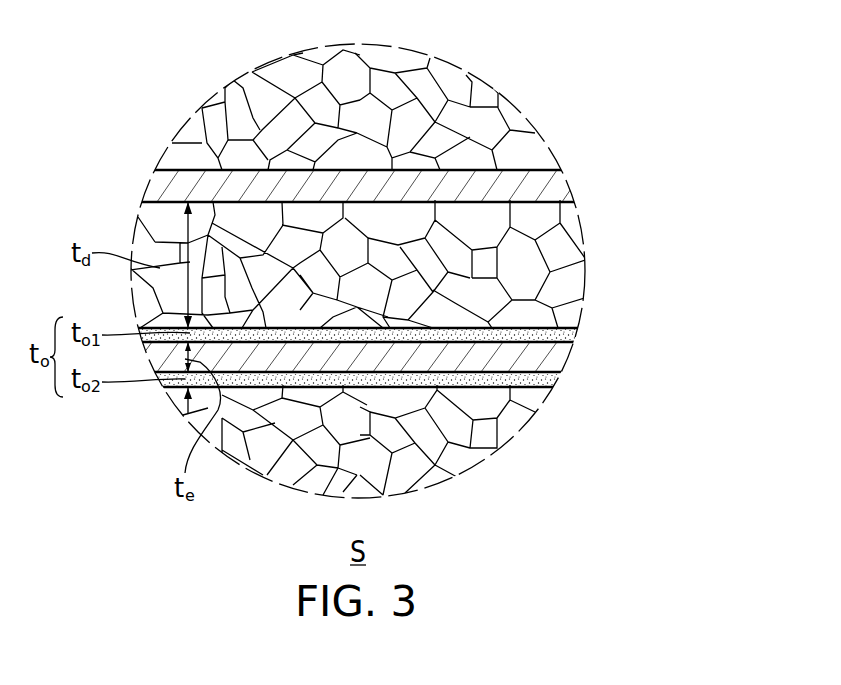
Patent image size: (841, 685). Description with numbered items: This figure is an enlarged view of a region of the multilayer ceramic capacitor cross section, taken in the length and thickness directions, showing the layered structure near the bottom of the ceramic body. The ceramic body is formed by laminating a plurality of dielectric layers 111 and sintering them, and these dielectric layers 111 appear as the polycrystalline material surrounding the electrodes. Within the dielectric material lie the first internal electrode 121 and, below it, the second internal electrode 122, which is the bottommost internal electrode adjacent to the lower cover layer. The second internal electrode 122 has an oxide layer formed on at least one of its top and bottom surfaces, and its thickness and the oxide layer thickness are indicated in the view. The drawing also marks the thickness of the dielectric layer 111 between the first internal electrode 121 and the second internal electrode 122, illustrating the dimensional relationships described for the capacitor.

The first internal electrode 121 is at (552, 187).
The dielectric layer 111 is at (560, 295).
The second internal electrode 122 is at (560, 357).